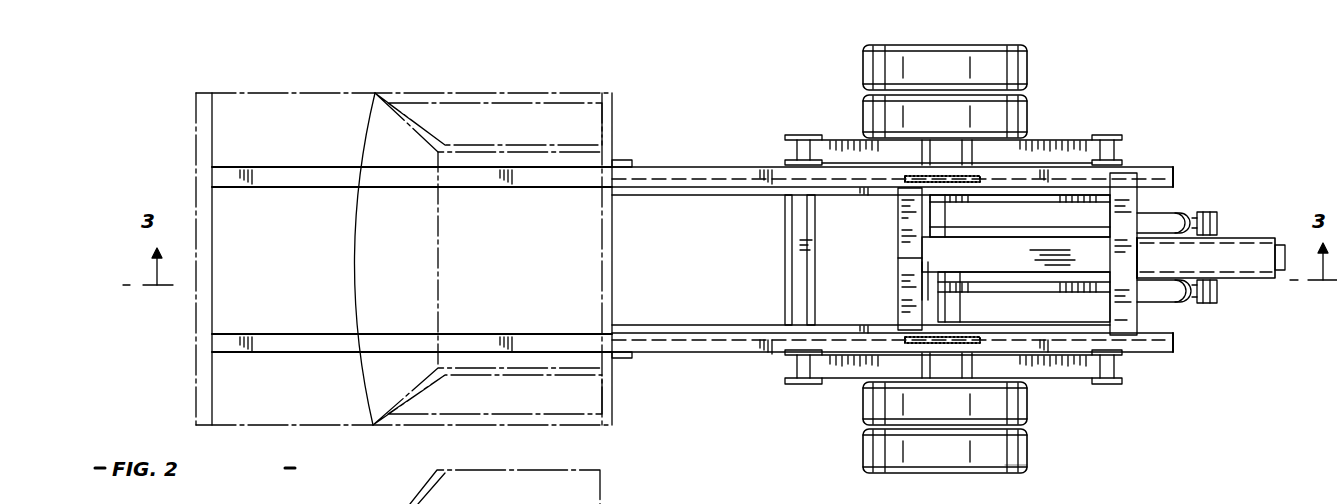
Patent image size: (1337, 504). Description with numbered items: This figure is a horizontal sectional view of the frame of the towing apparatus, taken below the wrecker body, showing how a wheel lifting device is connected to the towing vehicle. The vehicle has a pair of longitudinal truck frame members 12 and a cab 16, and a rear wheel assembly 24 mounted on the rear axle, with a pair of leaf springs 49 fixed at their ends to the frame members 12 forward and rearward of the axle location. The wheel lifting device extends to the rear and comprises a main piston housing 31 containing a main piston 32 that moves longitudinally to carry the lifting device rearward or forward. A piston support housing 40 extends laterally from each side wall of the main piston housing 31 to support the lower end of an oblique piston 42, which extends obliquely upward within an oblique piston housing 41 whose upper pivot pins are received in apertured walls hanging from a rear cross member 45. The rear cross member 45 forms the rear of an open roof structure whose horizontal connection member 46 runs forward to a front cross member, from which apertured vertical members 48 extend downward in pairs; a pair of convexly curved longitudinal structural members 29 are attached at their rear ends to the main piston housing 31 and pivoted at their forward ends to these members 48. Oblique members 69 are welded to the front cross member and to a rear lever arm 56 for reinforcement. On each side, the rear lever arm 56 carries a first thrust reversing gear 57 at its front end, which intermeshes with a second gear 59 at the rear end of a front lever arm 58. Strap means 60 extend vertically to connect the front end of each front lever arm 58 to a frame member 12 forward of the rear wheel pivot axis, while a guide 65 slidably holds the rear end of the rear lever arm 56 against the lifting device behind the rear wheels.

The longitudinal truck frame members 12 is at (705, 167).
The cab 16 is at (612, 410).
The rear wheel assembly 24 is at (1008, 475).
The longitudinal structural members 29 is at (1050, 225).
The main piston housing 31 is at (1245, 240).
The main piston 32 is at (1280, 245).
The piston support housing 40 is at (1218, 293).
The oblique piston housings 41 is at (1160, 215).
The oblique pistons 42 is at (1212, 215).
The rear cross member 45 is at (1132, 232).
The horizontal connection member 46 is at (1016, 254).
The apertured vertical members 48 is at (925, 290).
The leaf springs 49 is at (1025, 140).
The rear lever arm 56 is at (1173, 170).
The gear 57 is at (1010, 200).
The front lever arm 58 is at (768, 325).
The gear 59 is at (905, 165).
The strap means 60 is at (626, 160).
The guide 65 is at (1128, 173).
The oblique members 69 is at (920, 196).